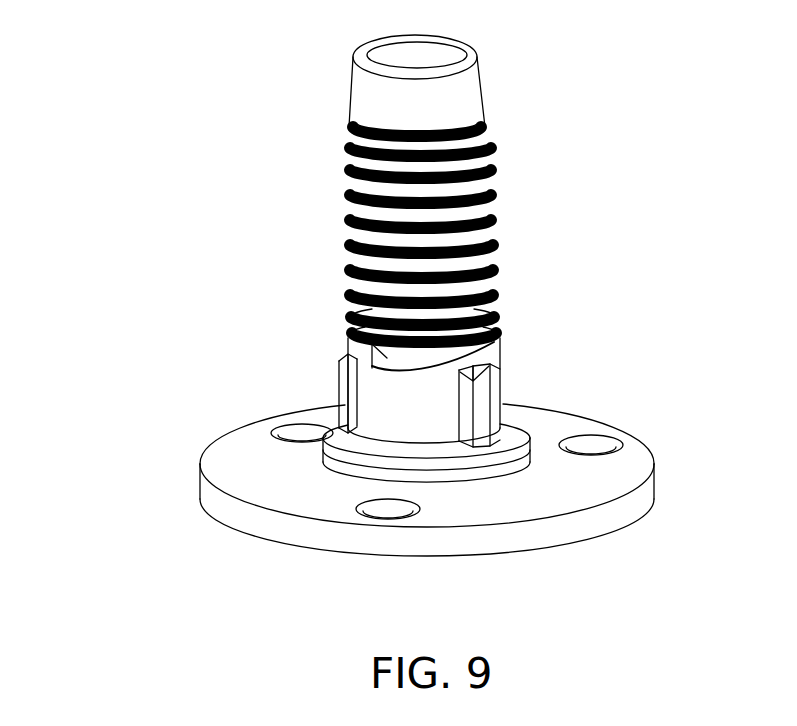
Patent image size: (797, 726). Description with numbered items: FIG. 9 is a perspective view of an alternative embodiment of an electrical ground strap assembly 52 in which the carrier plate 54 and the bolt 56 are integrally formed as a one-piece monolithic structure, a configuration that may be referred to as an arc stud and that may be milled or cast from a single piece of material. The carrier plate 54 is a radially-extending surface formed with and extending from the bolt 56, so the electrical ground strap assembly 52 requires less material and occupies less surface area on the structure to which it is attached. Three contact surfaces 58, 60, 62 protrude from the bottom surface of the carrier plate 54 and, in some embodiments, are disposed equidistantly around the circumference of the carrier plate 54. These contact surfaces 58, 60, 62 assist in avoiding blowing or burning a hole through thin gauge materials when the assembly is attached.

The electrical ground strap assembly 52 is at (200, 409).
The carrier plate 54 is at (557, 422).
The bolt 56 is at (476, 97).
The contact surface 58 is at (302, 428).
The contact surface 60 is at (373, 508).
The contact surface 62 is at (623, 450).